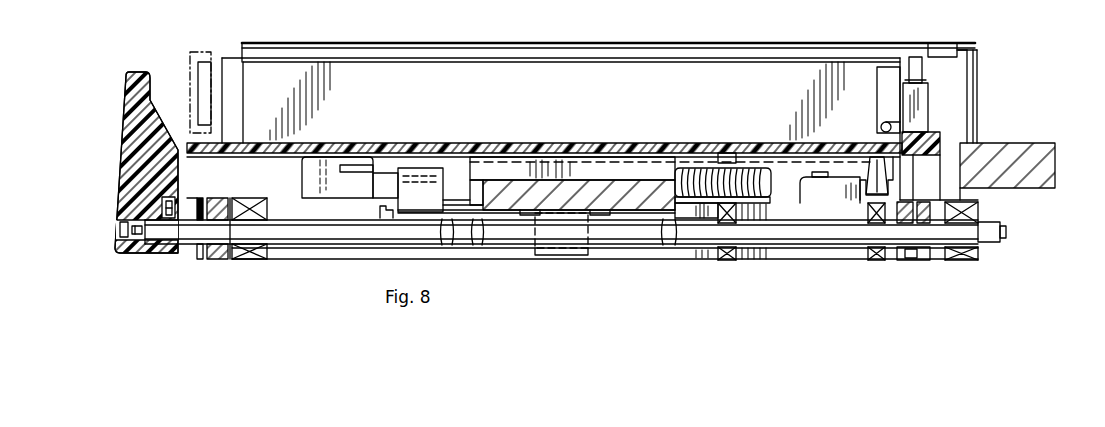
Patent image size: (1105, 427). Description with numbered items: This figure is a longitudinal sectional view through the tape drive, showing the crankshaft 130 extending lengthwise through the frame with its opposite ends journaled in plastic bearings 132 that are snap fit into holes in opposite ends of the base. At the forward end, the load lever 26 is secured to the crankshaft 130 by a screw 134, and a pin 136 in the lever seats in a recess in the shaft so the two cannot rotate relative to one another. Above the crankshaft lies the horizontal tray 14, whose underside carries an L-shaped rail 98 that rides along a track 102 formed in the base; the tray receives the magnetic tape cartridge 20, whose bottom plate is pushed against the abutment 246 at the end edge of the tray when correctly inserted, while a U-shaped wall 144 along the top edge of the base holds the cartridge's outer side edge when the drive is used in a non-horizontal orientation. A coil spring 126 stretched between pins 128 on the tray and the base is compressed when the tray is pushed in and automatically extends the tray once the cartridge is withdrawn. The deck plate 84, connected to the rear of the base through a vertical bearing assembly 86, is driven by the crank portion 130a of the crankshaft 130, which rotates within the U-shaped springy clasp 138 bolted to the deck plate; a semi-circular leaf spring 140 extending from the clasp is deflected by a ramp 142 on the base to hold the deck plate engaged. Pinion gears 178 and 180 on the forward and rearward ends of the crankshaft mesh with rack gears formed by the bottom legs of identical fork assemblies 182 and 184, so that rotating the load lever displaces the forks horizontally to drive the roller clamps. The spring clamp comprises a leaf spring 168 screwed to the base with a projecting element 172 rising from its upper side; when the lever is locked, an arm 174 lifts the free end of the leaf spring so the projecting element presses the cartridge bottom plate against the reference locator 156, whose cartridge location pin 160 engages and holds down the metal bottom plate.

The tray 14 is at (567, 147).
The magnetic tape cartridge 20 is at (200, 50).
The load lever 26 is at (128, 122).
The deck plate 84 is at (1040, 145).
The vertical bearing assembly 86 is at (967, 63).
The L-shaped rail 98 is at (455, 170).
The track 102 is at (313, 168).
The coil spring 126 is at (690, 167).
The pin 128 is at (725, 158).
The crankshaft 130 is at (363, 233).
The crank portion 130a is at (608, 237).
The plastic bearing 132 is at (257, 252).
The screw 134 is at (120, 228).
The pin 136 is at (165, 205).
The springy clasp 138 is at (553, 250).
The leaf spring 140 is at (410, 177).
The ramp 142 is at (380, 211).
The U-shaped wall 144 is at (560, 62).
The reference locator 156 is at (923, 105).
The cartridge location pin 160 is at (888, 125).
The leaf spring 168 is at (873, 197).
The projecting element 172 is at (876, 158).
The arm 174 is at (877, 257).
The pinion gear 178 is at (210, 258).
The pinion gear 180 is at (910, 257).
The fork assembly 182 is at (200, 197).
The fork assembly 184 is at (922, 203).
The abutment 246 is at (937, 137).